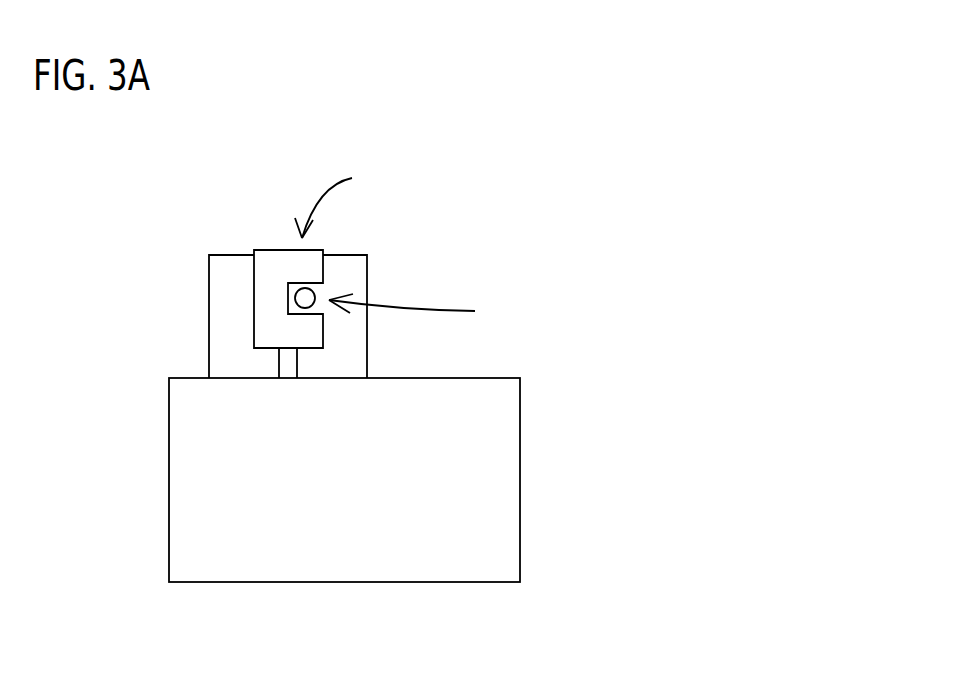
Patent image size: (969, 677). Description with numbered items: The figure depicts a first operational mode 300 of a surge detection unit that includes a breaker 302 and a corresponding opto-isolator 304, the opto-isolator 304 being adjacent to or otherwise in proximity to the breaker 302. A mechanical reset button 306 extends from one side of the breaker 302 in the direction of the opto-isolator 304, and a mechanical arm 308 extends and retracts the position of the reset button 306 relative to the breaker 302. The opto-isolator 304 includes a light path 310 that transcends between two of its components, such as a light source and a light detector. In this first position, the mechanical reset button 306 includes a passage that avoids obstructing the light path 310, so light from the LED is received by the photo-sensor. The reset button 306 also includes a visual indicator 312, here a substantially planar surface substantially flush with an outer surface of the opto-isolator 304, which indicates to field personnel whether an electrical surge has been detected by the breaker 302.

The first operational mode 300 is at (235, 173).
The breaker 302 is at (363, 522).
The opto-isolator 304 is at (367, 333).
The mechanical reset button 306 is at (254, 300).
The mechanical arm 308 is at (279, 363).
The light path 310 is at (315, 295).
The visual indicator 312 is at (288, 248).